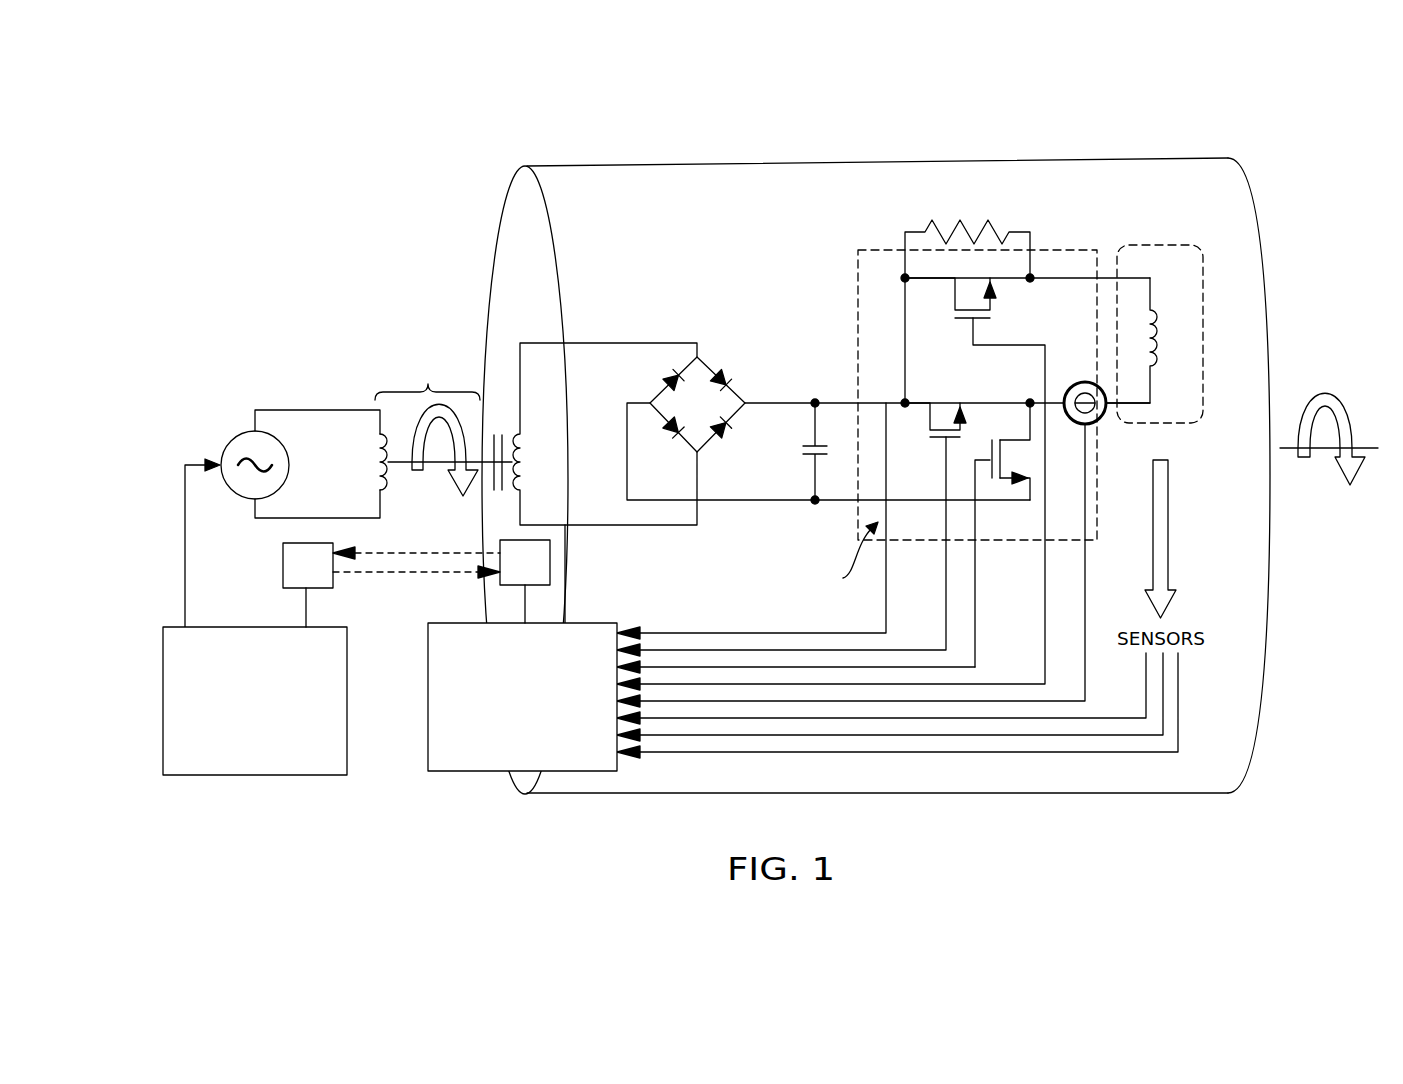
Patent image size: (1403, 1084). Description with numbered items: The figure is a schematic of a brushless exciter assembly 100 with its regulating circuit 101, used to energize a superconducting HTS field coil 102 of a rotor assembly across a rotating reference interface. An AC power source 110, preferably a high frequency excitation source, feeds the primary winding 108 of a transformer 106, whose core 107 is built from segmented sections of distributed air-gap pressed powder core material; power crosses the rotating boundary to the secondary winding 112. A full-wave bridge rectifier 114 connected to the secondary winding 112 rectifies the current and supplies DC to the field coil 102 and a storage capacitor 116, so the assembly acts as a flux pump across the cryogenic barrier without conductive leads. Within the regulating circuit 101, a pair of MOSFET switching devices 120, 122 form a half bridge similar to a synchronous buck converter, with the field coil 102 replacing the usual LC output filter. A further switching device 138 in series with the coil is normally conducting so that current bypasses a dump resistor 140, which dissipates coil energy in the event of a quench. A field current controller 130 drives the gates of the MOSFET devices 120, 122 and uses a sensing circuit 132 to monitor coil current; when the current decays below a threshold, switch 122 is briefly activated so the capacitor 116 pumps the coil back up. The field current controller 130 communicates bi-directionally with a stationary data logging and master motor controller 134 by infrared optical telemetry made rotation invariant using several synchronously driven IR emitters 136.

The brushless exciter assembly 100 is at (1250, 168).
The regulating circuit 101 is at (1068, 243).
The HTS field coil 102 is at (1188, 345).
The transformer 106 is at (428, 382).
The core 107 is at (488, 490).
The primary winding 108 is at (383, 462).
The AC power source 110 is at (243, 433).
The secondary winding 112 is at (528, 452).
The full-wave bridge rectifier 114 is at (727, 375).
The storage capacitor 116 is at (803, 450).
The MOSFET switching device 120 is at (945, 405).
The MOSFET switching device 122 is at (1025, 458).
The field current controller 130 is at (490, 765).
The sensing circuit 132 is at (1102, 415).
The data logging and master motor controller 134 is at (283, 762).
The IR emitters 136 is at (333, 590).
The switching device 138 is at (962, 322).
The dump resistor 140 is at (975, 222).